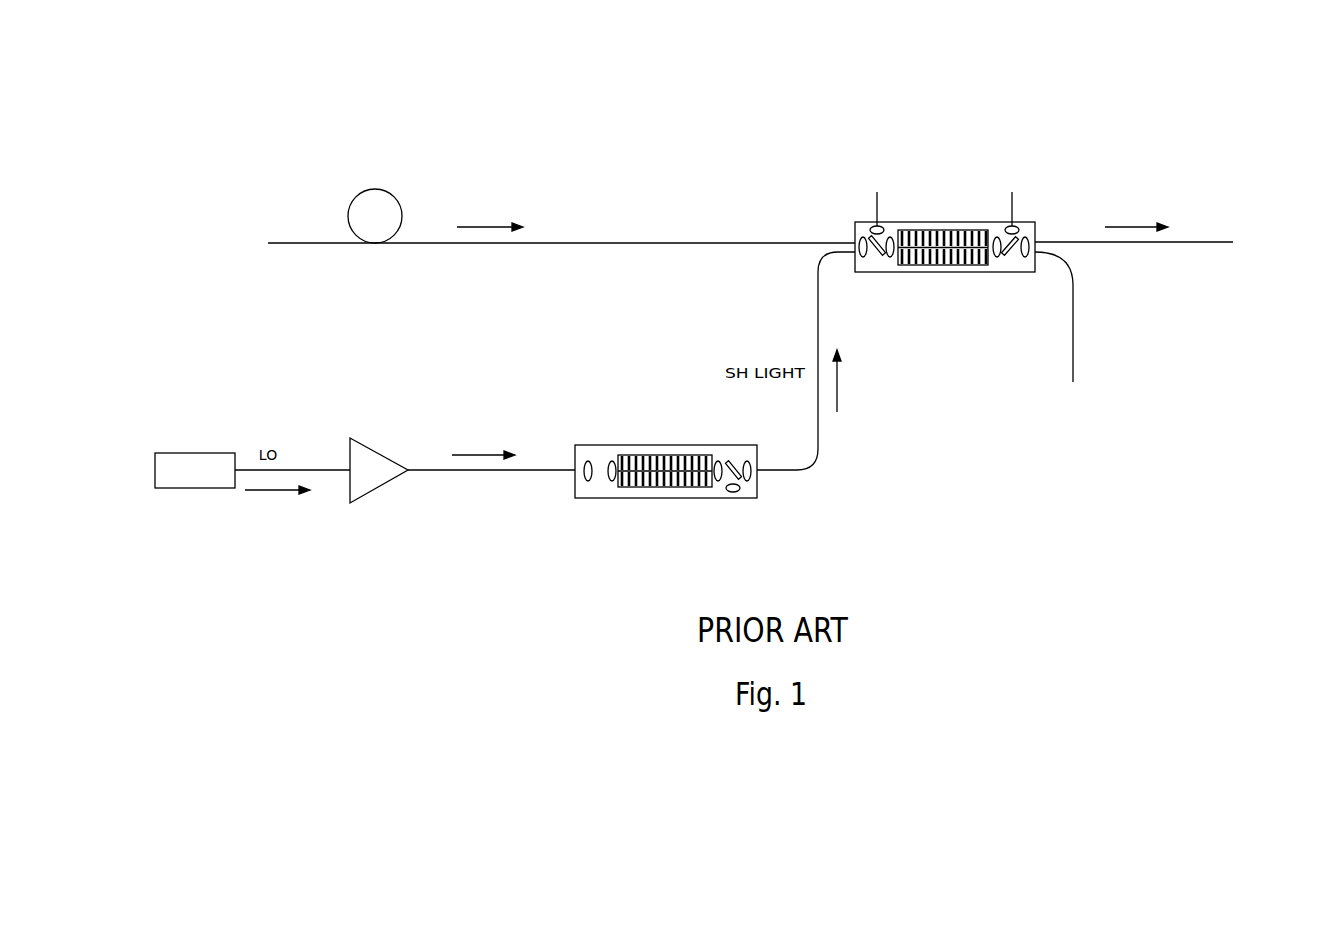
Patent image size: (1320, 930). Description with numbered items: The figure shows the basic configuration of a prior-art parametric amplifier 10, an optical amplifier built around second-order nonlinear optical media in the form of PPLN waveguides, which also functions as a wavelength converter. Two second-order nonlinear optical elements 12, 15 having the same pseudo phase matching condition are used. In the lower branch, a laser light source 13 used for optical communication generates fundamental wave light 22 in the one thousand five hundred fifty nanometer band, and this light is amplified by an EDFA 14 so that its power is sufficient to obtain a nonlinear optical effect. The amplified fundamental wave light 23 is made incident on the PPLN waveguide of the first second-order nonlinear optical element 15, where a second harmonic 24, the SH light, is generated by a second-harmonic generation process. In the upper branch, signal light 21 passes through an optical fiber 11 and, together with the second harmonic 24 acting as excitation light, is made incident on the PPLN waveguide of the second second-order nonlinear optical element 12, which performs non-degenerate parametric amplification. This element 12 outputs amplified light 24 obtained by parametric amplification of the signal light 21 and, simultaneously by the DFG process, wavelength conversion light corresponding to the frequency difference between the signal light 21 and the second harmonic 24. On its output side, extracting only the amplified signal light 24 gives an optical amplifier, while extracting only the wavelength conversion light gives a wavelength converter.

The parametric amplifier 10 is at (1226, 78).
The optical fiber 11 is at (375, 189).
The second second-order nonlinear optical element 12 is at (885, 273).
The laser light source 13 is at (192, 452).
The EDFA 14 is at (372, 448).
The first second-order nonlinear optical element 15 is at (592, 499).
The signal light 21 is at (478, 223).
The fundamental wave light 22 is at (272, 495).
The amplified fundamental wave light 23 is at (478, 452).
The second harmonic 24 is at (839, 388).